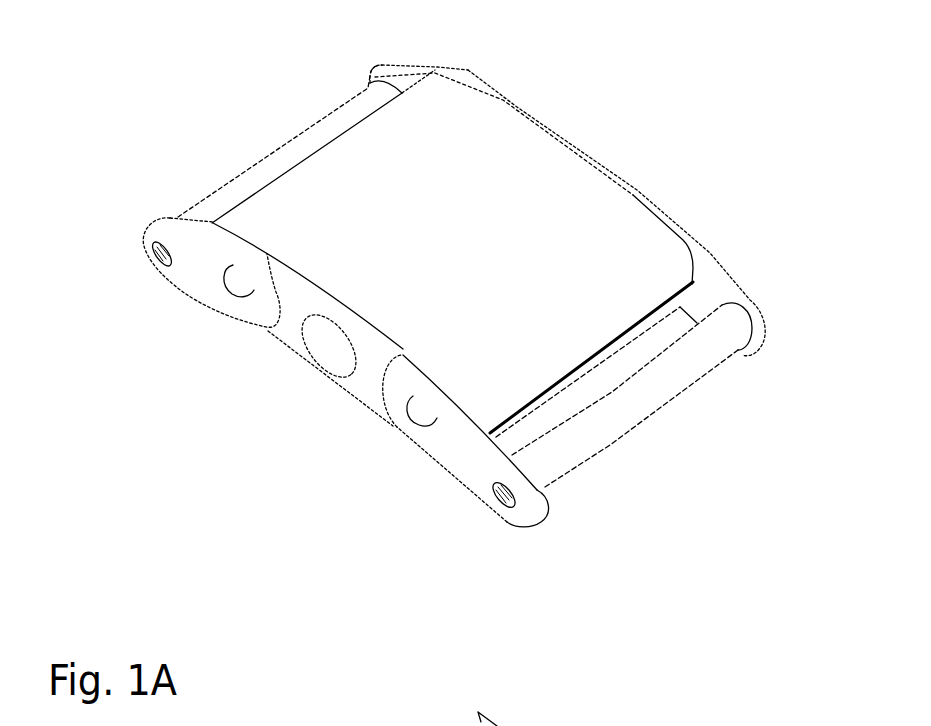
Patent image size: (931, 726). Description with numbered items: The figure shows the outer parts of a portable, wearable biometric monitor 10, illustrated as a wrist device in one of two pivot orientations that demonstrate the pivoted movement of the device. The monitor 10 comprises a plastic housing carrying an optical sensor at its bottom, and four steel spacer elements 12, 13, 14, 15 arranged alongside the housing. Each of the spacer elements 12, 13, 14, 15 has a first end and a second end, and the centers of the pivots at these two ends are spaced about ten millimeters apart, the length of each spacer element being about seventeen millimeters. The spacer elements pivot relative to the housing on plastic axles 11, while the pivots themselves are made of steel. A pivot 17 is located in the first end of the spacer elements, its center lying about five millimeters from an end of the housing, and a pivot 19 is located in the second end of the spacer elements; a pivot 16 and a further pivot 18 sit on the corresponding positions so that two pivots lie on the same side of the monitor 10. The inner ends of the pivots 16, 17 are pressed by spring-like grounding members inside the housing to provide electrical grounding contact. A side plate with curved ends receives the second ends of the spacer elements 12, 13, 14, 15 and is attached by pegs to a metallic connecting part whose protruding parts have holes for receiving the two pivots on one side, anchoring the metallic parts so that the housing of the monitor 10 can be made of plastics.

The biometric monitor 10 is at (437, 251).
The axles 11 is at (650, 427).
The spacer element 12 is at (185, 293).
The spacer element 13 is at (452, 475).
The spacer element 14 is at (402, 93).
The spacer element 15 is at (716, 302).
The pivot 16 is at (237, 297).
The pivot 17 is at (416, 428).
The first hole 18 is at (157, 267).
The pivot 19 is at (506, 522).